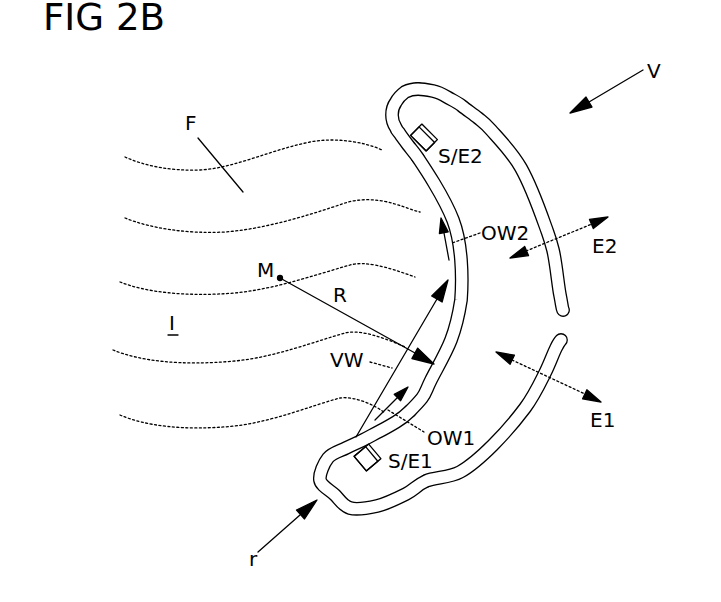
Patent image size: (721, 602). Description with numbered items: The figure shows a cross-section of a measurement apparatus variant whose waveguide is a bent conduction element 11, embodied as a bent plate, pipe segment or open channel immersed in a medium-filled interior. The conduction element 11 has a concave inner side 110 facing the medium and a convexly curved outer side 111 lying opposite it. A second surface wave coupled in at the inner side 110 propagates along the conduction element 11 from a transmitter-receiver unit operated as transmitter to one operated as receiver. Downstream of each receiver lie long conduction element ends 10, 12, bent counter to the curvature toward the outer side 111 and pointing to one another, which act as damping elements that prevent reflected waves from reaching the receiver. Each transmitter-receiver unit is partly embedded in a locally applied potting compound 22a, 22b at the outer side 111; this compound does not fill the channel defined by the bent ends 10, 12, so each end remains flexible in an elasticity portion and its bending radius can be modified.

The conduction element end 10 is at (520, 437).
The conduction element end 12 is at (497, 142).
The conduction element 11 is at (394, 146).
The outer side 111 is at (469, 309).
The inner side 110 is at (317, 460).
The potting compound 22a is at (381, 467).
The potting compound 22b is at (427, 122).